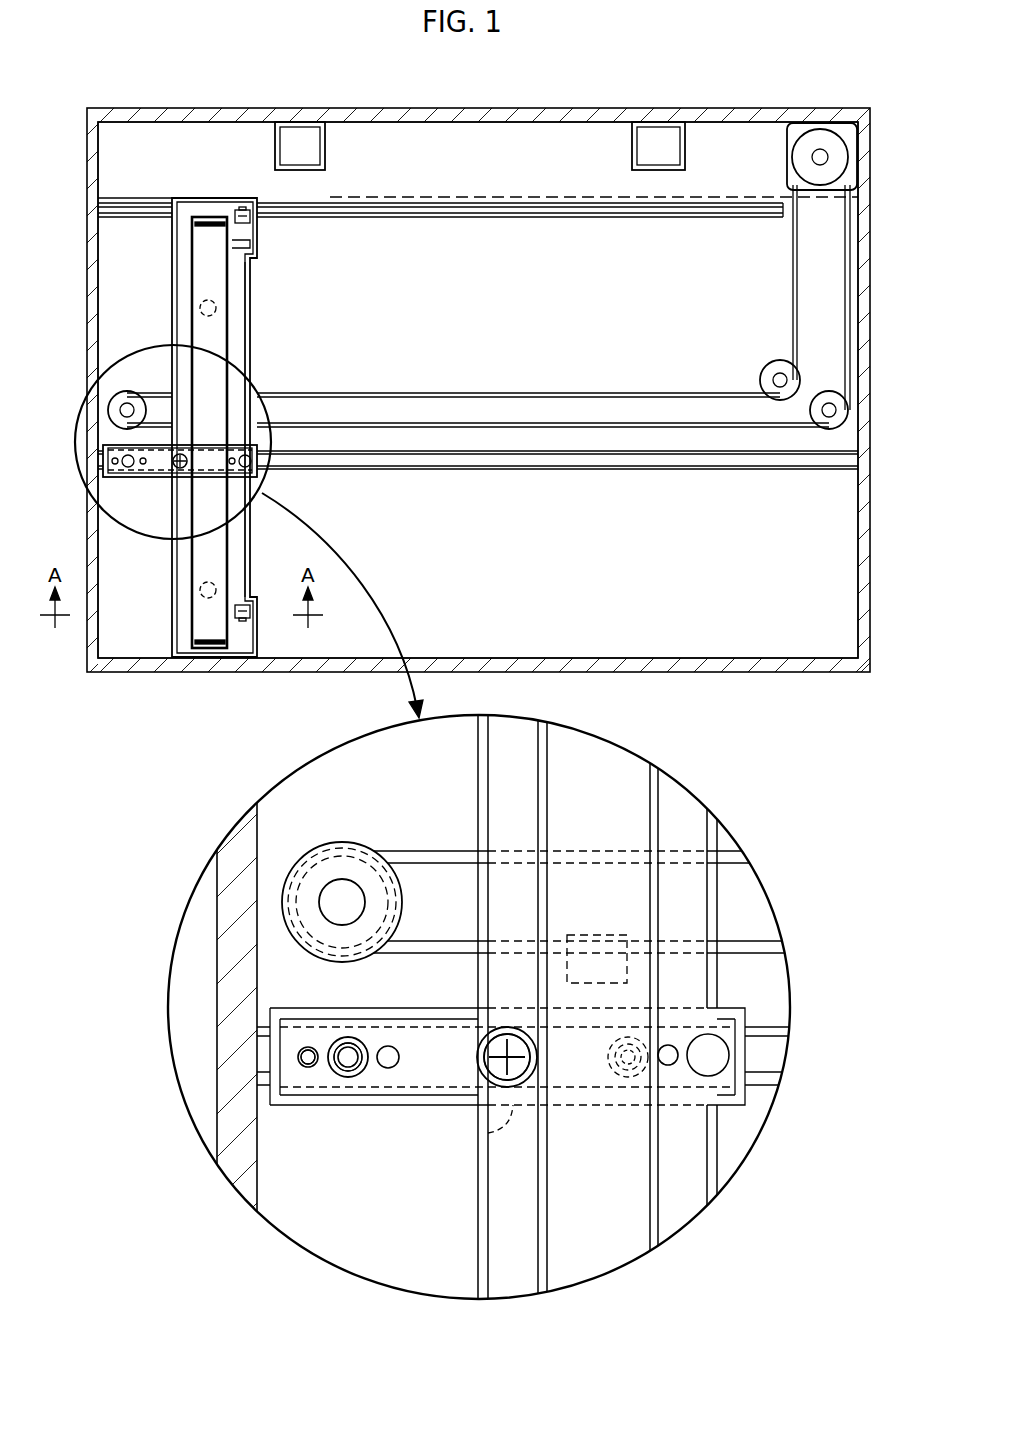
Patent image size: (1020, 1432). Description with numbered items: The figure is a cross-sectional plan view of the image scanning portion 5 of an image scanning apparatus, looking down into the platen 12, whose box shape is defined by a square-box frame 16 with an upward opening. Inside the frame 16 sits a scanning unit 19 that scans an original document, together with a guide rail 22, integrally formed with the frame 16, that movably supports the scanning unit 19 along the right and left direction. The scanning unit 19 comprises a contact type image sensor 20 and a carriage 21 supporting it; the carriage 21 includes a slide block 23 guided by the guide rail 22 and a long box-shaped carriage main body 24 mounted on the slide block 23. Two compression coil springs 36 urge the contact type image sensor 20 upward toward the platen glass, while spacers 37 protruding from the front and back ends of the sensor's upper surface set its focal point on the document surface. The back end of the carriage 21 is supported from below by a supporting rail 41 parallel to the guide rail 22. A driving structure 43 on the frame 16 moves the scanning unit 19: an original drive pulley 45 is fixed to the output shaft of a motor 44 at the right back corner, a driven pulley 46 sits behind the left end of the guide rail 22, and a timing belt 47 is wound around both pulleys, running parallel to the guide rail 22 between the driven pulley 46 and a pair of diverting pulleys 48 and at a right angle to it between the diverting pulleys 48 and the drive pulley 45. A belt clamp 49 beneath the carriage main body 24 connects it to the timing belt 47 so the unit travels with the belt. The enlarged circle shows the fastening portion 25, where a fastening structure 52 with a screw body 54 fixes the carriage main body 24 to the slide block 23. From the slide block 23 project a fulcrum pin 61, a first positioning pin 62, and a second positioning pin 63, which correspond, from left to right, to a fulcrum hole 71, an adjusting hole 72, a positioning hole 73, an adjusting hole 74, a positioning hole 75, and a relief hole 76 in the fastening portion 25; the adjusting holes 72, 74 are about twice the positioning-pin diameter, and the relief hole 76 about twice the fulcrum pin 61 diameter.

The image scanning portion 5 is at (885, 150).
The platen 12 is at (478, 390).
The frame 16 is at (698, 672).
The scanning unit 19 is at (315, 280).
The contact type image sensor 20 is at (219, 279).
The carriage 21 is at (250, 343).
The guide rail 22 is at (487, 471).
The slide block 23 is at (488, 1135).
The carriage main body 24 is at (476, 1225).
The fastening portion 25 is at (373, 1105).
The springs 36 is at (194, 305).
The spacers 37 is at (207, 213).
The supporting rail 41 is at (488, 208).
The driving structure 43 is at (640, 389).
The motor 44 is at (797, 133).
The original drive pulley 45 is at (802, 150).
The driven pulley 46 is at (121, 391).
The timing belt 47 is at (553, 392).
The diverting pulleys 48 is at (830, 393).
The belt clamp 49 is at (592, 933).
The fastening structure 52 is at (507, 1057).
The screw body 54 is at (520, 1065).
The fulcrum pin 61 is at (305, 1047).
The first positioning pin 62 is at (350, 1050).
The second positioning pin 63 is at (632, 1066).
The fulcrum hole 71 is at (308, 1057).
The adjusting hole 72 is at (343, 1068).
The positioning hole 73 is at (398, 1049).
The adjusting hole 74 is at (618, 1058).
The positioning hole 75 is at (668, 1047).
The relief hole 76 is at (717, 1046).